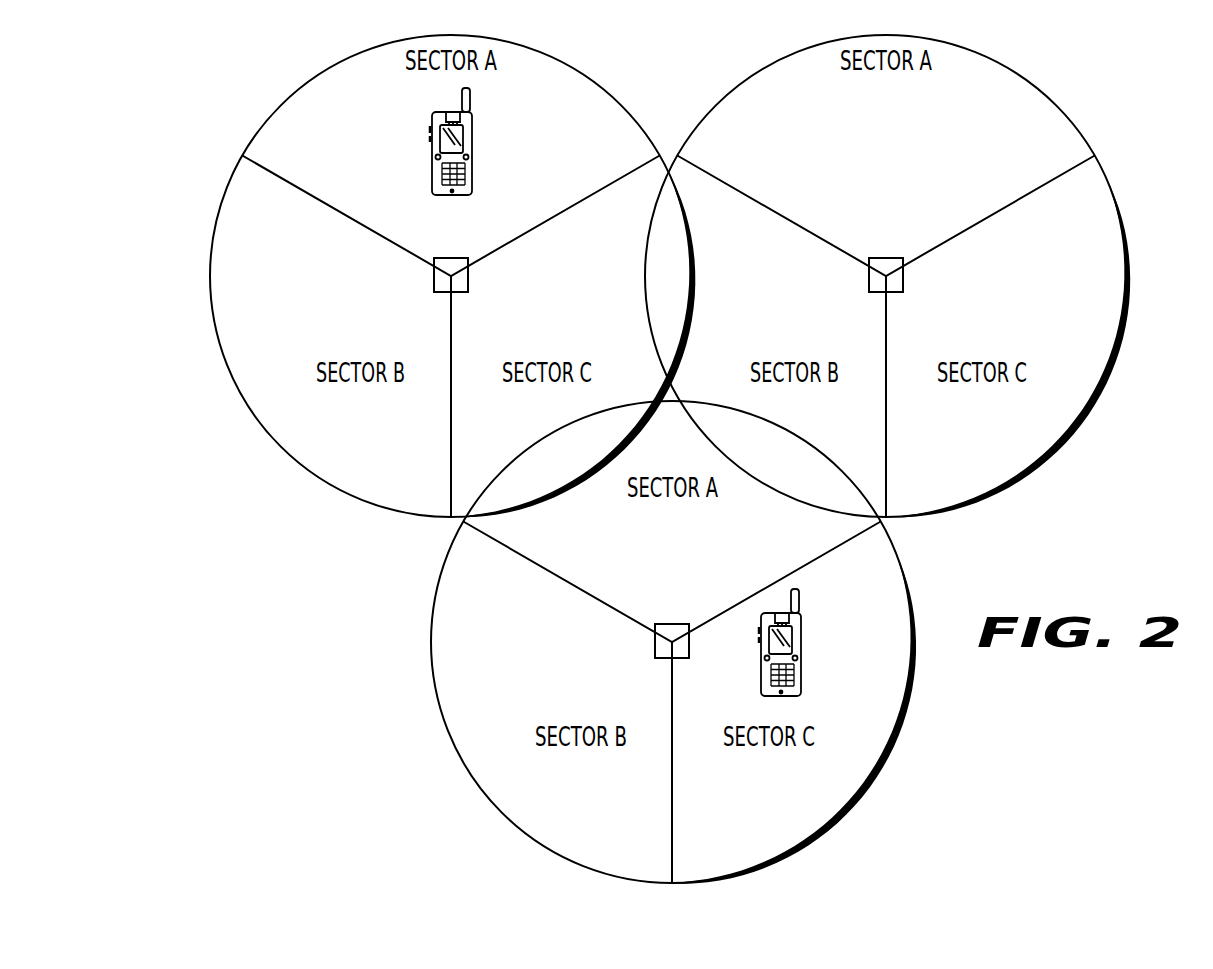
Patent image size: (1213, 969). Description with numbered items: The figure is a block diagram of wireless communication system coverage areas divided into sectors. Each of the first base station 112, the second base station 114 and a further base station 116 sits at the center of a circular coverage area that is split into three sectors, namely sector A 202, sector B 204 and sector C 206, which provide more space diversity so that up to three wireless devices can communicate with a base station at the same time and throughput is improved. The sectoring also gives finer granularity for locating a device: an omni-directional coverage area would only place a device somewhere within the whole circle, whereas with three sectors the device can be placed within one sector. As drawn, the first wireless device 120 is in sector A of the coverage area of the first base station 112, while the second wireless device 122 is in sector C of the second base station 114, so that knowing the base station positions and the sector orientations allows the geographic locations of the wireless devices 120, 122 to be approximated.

The first base station 112 is at (441, 292).
The second base station 114 is at (680, 658).
The base station 116 is at (895, 292).
The first wireless device 120 is at (473, 143).
The second wireless device 122 is at (802, 650).
The sector A 202 is at (580, 89).
The sector B 204 is at (217, 277).
The sector C 206 is at (643, 185).